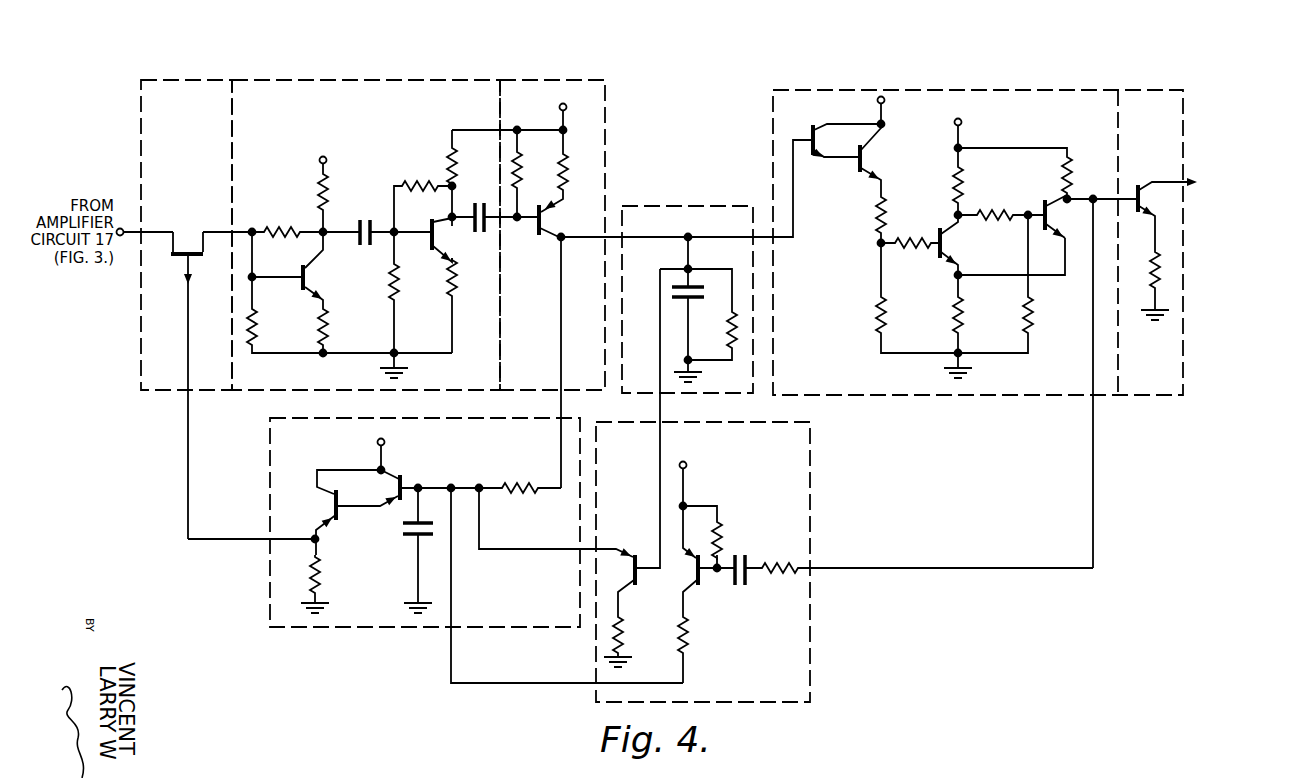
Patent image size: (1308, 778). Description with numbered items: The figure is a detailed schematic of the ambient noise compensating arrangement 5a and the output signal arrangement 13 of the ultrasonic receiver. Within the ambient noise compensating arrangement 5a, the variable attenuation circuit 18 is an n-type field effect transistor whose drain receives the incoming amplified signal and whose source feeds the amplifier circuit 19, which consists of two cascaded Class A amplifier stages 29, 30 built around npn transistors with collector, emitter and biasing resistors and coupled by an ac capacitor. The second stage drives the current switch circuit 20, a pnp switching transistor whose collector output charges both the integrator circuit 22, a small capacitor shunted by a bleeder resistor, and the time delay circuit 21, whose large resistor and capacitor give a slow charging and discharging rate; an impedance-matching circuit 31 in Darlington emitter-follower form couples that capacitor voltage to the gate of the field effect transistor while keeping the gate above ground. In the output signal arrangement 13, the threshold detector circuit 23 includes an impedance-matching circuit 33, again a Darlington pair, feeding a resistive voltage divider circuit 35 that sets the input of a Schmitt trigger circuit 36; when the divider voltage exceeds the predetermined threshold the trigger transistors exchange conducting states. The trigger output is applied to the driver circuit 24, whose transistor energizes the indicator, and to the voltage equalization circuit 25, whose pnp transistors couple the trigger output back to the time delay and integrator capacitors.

The variable attenuation circuit 18 is at (174, 78).
The amplifier circuit 19 is at (366, 77).
The ambient noise compensating arrangement 5a is at (470, 70).
The current switch circuit 20 is at (612, 97).
The time delay circuit 21 is at (575, 418).
The integrator circuit 22 is at (701, 203).
The threshold detector circuit 23 is at (902, 84).
The driver circuit 24 is at (1167, 88).
The voltage equalization circuit 25 is at (818, 447).
The output signal arrangement 13 is at (1032, 83).
The amplifier stage 29 is at (303, 213).
The amplifier stage 30 is at (430, 149).
The impedance-matching circuit 31 is at (328, 453).
The impedance-matching circuit 33 is at (895, 125).
The resistive voltage divider circuit 35 is at (852, 249).
The Schmitt trigger circuit 36 is at (1007, 140).